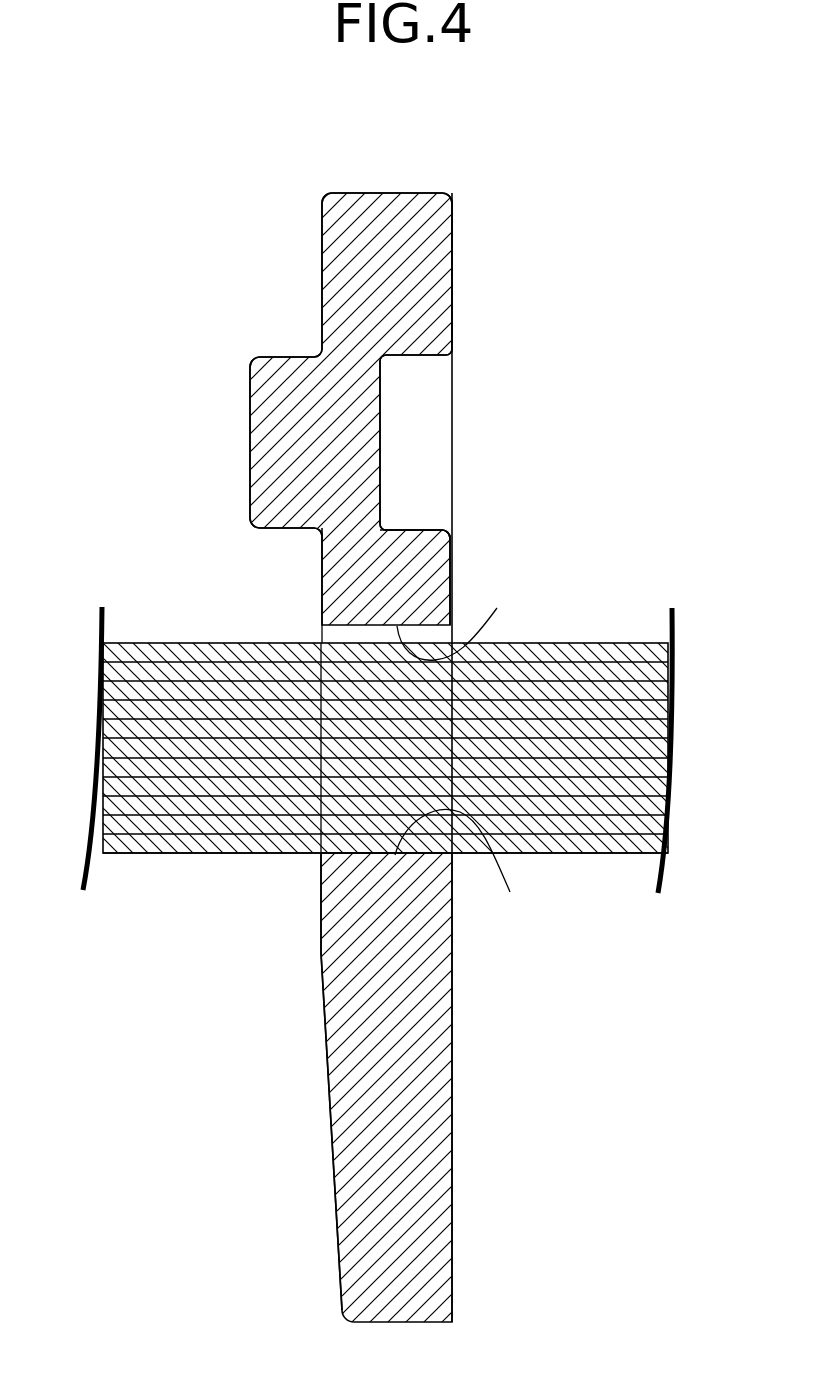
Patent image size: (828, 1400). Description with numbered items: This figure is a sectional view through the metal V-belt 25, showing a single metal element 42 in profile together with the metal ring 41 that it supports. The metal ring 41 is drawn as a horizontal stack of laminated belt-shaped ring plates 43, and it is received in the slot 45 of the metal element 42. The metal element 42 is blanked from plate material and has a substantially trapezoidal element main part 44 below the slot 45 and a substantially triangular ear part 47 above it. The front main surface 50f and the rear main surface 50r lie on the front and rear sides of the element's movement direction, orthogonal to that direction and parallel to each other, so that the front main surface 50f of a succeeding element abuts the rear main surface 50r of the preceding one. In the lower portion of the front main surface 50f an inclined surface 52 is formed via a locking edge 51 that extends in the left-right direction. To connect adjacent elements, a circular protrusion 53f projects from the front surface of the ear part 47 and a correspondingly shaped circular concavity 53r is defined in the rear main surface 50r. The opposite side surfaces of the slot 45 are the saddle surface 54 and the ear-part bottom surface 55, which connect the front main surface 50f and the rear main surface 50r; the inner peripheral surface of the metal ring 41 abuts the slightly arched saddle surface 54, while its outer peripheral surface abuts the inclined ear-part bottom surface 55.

The metal V-belt 25 is at (382, 744).
The metal ring 41 is at (190, 860).
The metal element 42 is at (377, 757).
The ring plate 43 is at (148, 710).
The element main part 44 is at (455, 1068).
The slot 45 is at (322, 790).
The ear part 47 is at (360, 318).
The front main surface 50f is at (320, 603).
The rear main surface 50r is at (452, 595).
The locking edge 51 is at (320, 925).
The inclined surface 52 is at (326, 1050).
The protrusion 53f is at (278, 430).
The concavity 53r is at (380, 407).
The saddle surface 54 is at (474, 867).
The ear-part bottom surface 55 is at (470, 620).